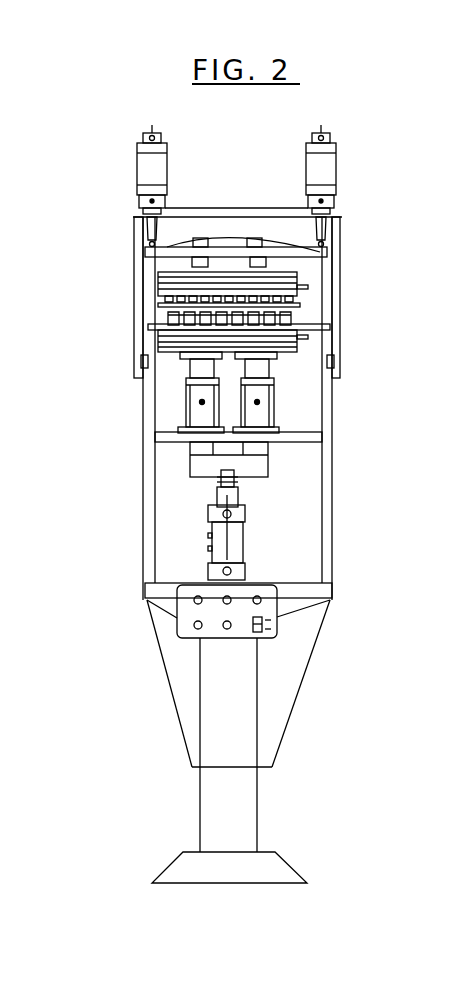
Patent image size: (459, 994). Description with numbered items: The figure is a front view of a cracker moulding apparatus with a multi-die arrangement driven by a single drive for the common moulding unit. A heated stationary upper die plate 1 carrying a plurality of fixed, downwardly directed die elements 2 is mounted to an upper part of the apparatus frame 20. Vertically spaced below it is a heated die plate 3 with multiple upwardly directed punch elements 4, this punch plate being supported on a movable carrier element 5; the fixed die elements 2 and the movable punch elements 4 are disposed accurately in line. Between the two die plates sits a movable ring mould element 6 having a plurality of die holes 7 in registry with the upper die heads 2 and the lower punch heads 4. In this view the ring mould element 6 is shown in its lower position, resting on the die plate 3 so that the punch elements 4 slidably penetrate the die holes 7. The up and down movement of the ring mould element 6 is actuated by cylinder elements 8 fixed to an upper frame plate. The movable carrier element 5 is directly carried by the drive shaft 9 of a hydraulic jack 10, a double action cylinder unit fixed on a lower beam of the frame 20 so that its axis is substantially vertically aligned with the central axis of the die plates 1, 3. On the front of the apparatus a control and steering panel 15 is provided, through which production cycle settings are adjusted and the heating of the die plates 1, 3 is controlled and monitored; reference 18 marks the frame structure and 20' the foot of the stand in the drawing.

The upper die plate 1 is at (160, 298).
The die elements 2 is at (165, 305).
The die plate 3 is at (160, 336).
The punch elements 4 is at (170, 318).
The carrier element 5 is at (190, 467).
The ring mould element 6 is at (310, 322).
The die holes 7 is at (297, 338).
The cylinder elements 8 is at (337, 163).
The drive shaft 9 is at (235, 487).
The hydraulic jack 10 is at (238, 548).
The operator panel 15 is at (177, 628).
The frame 18 is at (318, 592).
The apparatus frame 20 is at (248, 726).
The base foot 20' is at (256, 858).